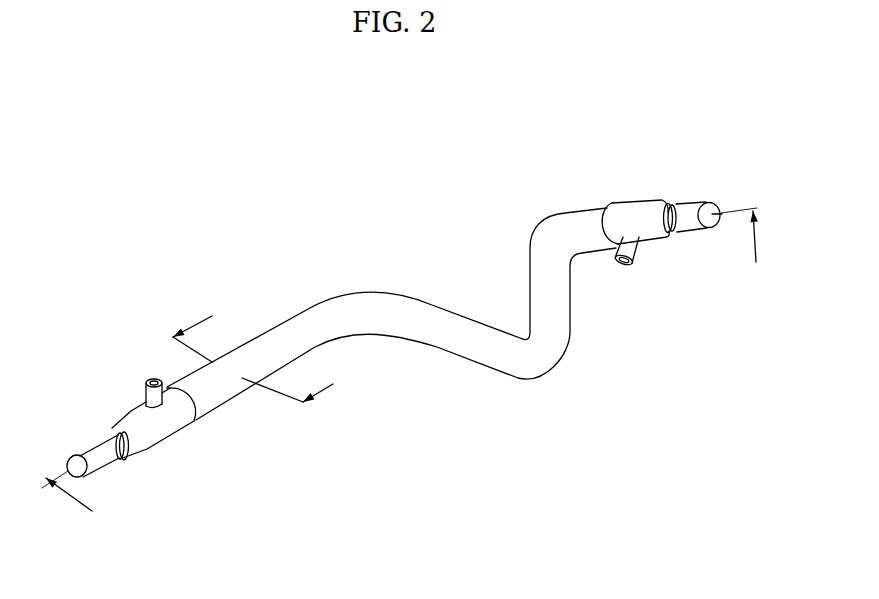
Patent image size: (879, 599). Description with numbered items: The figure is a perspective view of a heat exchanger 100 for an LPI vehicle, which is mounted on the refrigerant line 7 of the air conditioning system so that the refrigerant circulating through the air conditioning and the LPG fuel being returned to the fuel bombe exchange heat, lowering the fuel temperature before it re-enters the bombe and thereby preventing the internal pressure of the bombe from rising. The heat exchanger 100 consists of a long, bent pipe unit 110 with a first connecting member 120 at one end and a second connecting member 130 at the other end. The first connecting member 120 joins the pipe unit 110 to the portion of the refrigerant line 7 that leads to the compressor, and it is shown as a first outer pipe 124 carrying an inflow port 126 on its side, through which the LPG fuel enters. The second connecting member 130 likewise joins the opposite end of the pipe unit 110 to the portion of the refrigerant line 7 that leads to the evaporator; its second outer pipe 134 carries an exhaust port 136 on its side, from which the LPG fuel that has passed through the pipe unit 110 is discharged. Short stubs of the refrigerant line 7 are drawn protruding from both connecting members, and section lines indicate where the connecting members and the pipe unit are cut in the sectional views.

The heat exchanger 100 is at (380, 136).
The pipe unit 110 is at (420, 293).
The first connecting member 120 is at (166, 425).
The first outer pipe 124 is at (175, 433).
The inflow port 126 is at (148, 380).
The second connecting member 130 is at (646, 237).
The second outer pipe 134 is at (628, 204).
The exhaust port 136 is at (628, 266).
The refrigerant line 7 is at (88, 447).